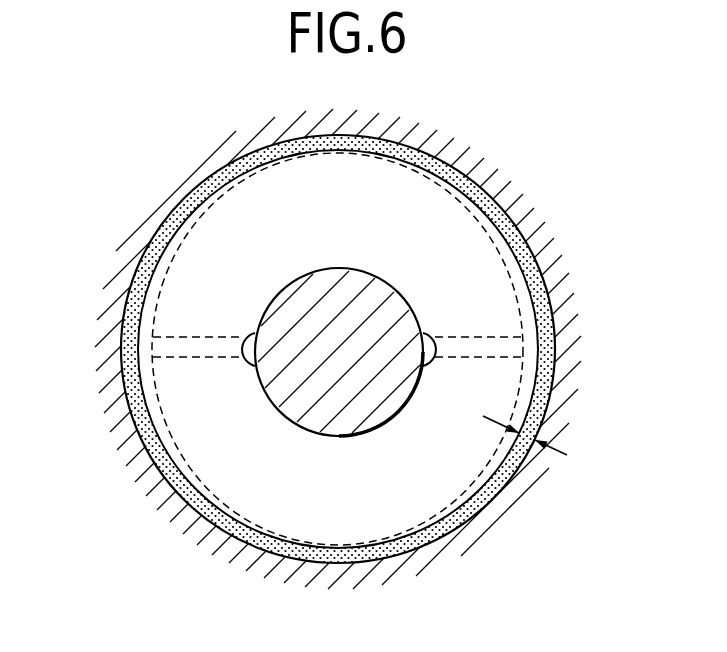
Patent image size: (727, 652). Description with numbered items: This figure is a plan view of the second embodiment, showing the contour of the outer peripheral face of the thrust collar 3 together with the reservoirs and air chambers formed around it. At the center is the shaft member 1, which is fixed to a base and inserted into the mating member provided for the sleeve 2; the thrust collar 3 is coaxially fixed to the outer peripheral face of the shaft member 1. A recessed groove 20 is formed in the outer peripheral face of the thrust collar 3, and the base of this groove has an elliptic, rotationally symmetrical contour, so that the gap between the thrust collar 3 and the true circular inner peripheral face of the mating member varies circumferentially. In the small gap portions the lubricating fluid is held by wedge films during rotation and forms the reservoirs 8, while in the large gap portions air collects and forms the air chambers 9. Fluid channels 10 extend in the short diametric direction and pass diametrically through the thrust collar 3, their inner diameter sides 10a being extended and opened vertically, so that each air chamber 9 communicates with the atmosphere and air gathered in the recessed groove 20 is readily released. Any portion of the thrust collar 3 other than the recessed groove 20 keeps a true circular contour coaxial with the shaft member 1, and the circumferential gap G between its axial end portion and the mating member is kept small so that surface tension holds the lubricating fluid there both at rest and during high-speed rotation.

The shaft member 1 is at (339, 279).
The sleeve 2 is at (125, 268).
The thrust collar 3 is at (393, 507).
The lubricating-fluid reservoir 8 is at (454, 171).
The air chamber 9 is at (148, 309).
The fluid channel 10 is at (207, 337).
The inner diameter side of fluid channel 10a is at (244, 363).
The recessed groove 20 is at (158, 384).
The circumferential gap G is at (527, 457).